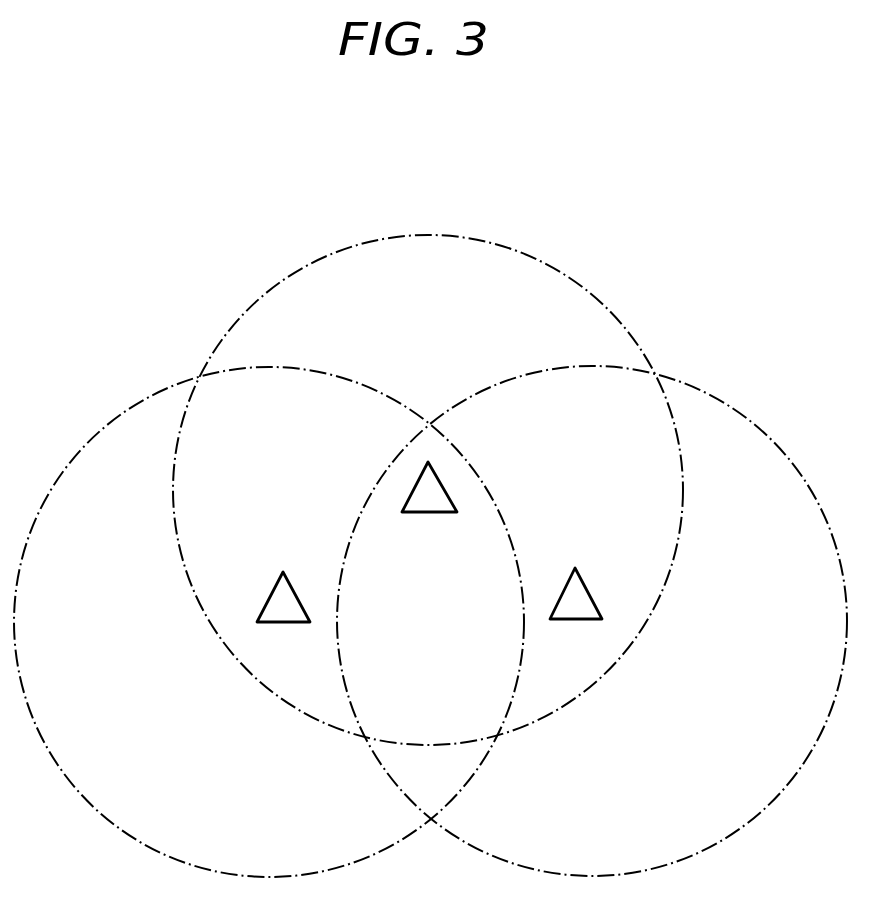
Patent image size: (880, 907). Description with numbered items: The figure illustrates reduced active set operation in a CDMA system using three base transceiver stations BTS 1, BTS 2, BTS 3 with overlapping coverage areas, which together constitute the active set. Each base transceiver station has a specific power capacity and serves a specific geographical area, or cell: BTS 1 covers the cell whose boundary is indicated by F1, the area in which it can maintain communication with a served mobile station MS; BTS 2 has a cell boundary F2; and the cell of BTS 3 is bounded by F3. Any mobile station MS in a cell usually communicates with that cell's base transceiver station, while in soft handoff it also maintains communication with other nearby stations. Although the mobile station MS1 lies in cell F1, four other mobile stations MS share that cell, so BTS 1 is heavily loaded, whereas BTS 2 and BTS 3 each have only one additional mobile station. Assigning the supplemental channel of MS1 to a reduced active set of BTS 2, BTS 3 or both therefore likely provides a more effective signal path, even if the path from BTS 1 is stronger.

The cell boundary of BTS1 F1 is at (428, 463).
The cell boundary of BTS2 F2 is at (269, 622).
The cell boundary of BTS3 F3 is at (592, 621).
The base transceiver station BTS 1 is at (430, 509).
The base transceiver station BTS 2 is at (286, 619).
The base transceiver station BTS 3 is at (579, 614).
The mobile station MS is at (476, 518).
The mobile station MS1 is at (426, 642).